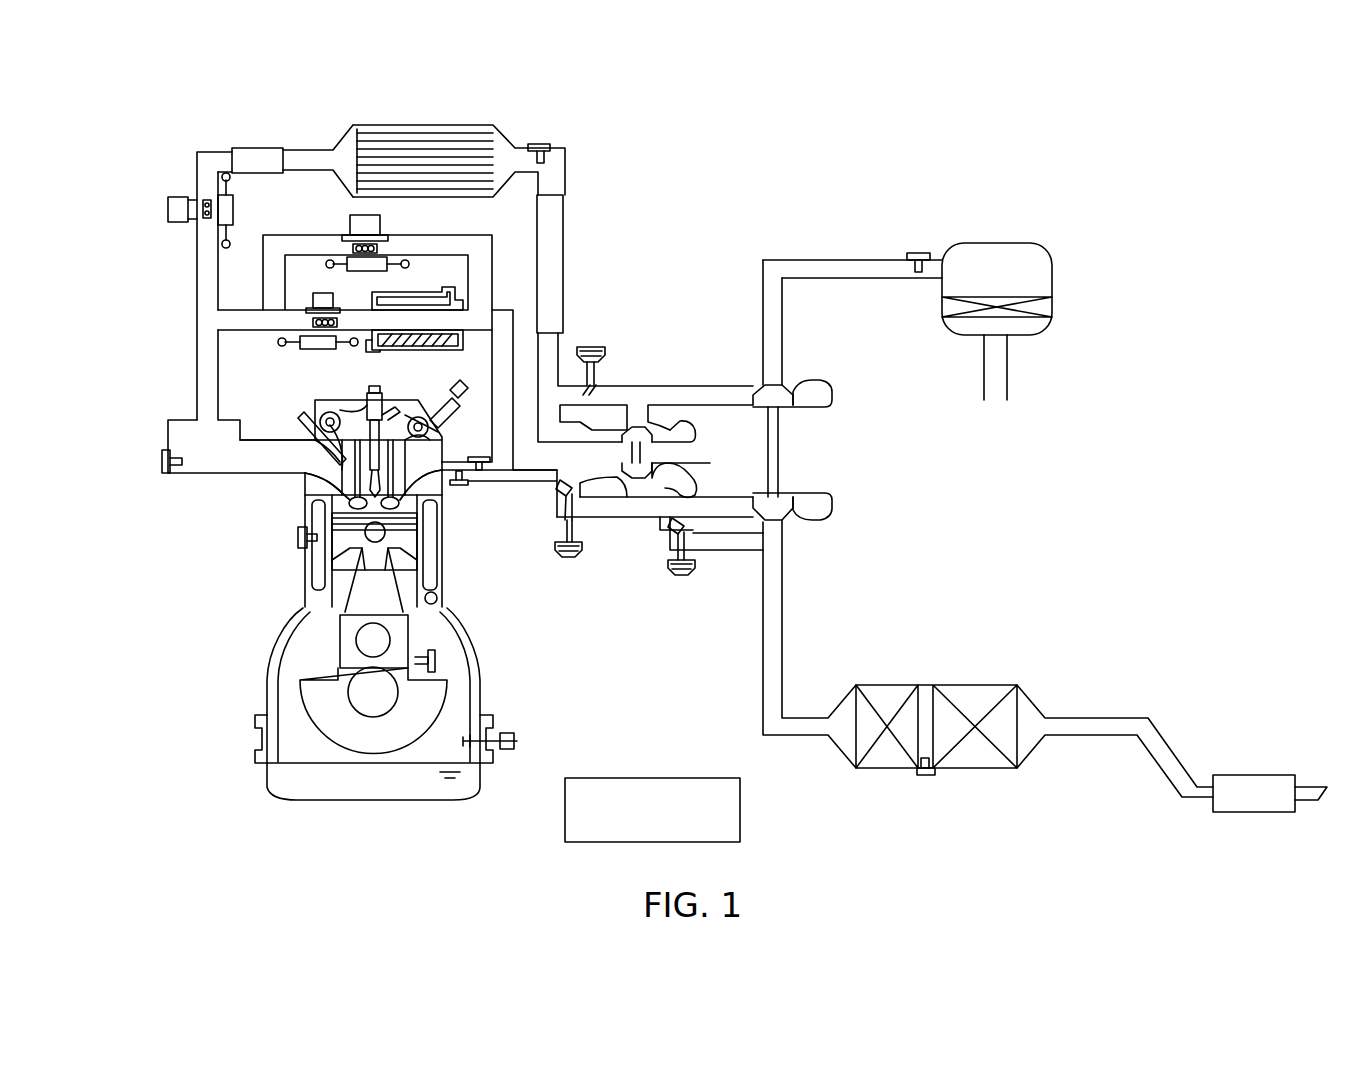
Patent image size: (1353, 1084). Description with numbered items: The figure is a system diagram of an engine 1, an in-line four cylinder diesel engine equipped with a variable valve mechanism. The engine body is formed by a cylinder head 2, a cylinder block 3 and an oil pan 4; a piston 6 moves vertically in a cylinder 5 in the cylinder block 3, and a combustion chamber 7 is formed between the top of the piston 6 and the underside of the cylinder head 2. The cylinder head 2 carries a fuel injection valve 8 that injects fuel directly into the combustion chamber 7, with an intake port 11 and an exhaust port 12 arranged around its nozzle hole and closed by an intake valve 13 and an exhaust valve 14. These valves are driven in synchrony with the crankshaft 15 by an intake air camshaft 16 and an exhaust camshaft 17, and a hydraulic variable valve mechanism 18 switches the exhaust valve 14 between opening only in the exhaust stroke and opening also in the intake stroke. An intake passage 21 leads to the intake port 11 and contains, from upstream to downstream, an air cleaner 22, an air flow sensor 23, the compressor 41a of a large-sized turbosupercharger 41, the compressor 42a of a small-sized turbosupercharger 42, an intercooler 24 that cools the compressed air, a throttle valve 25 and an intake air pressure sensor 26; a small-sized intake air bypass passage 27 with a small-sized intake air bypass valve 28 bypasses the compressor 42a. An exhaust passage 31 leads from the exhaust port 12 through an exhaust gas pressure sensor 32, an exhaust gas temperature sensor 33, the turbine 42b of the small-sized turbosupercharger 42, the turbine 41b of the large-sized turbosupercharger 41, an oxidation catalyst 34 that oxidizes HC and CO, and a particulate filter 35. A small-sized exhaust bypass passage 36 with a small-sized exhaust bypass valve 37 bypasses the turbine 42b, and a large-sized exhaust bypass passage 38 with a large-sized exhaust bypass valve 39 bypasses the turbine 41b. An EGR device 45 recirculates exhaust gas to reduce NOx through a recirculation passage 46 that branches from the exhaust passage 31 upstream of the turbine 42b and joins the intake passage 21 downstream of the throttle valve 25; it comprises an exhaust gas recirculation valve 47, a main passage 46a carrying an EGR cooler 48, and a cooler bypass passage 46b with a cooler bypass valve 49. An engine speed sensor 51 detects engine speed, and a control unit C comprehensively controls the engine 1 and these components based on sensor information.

The engine 1 is at (176, 610).
The cylinder head 2 is at (320, 400).
The cylinder block 3 is at (305, 598).
The oil pan 4 is at (270, 778).
The cylinder 5 is at (345, 576).
The piston 6 is at (415, 582).
The combustion chamber 7 is at (340, 515).
The fuel injection valve 8 is at (370, 392).
The intake port 11 is at (302, 473).
The exhaust port 12 is at (430, 485).
The intake valve 13 is at (350, 503).
The exhaust valve 14 is at (435, 515).
The crankshaft 15 is at (345, 700).
The intake air camshaft 16 is at (318, 416).
The exhaust camshaft 17 is at (438, 420).
The variable valve mechanism 18 is at (452, 388).
The intake passage 21 is at (197, 290).
The air cleaner 22 is at (1040, 300).
The air flow sensor 23 is at (916, 250).
The intercooler 24 is at (428, 125).
The throttle valve 25 is at (237, 204).
The intake air pressure sensor 26 is at (162, 462).
The small-sized intake air bypass passage 27 is at (620, 385).
The small-sized intake air bypass valve 28 is at (590, 345).
The exhaust passage 31 is at (538, 485).
The exhaust gas pressure sensor 32 is at (458, 486).
The exhaust gas temperature sensor 33 is at (478, 457).
The oxidation catalyst 34 is at (878, 685).
The particulate filter 35 is at (966, 685).
The small-sized exhaust bypass passage 36 is at (623, 518).
The small-sized exhaust bypass valve 37 is at (569, 560).
The large-sized exhaust bypass passage 38 is at (735, 552).
The large-sized exhaust bypass valve 39 is at (683, 580).
The large-sized turbosupercharger 41 is at (795, 450).
The compressor of large-sized turbosupercharger 41a is at (795, 383).
The turbine of large-sized turbosupercharger 41b is at (795, 525).
The small-sized turbosupercharger 42 is at (662, 454).
The compressor of small-sized turbosupercharger 42a is at (672, 425).
The turbine of small-sized turbosupercharger 42b is at (680, 488).
The EGR device 45 is at (520, 213).
The recirculation passage 46 is at (500, 310).
The main passage 46a is at (410, 340).
The cooler bypass passage 46b is at (398, 232).
The exhaust gas recirculation valve 47 is at (305, 350).
The EGR cooler 48 is at (422, 296).
The cooler bypass valve 49 is at (352, 271).
The engine speed sensor 51 is at (440, 661).
The control unit C is at (627, 778).